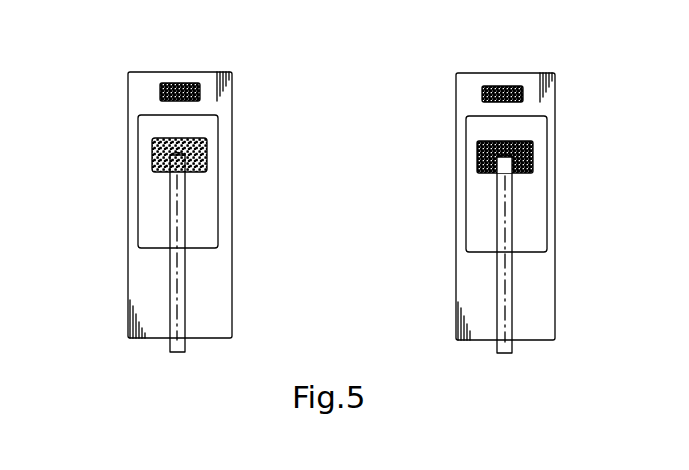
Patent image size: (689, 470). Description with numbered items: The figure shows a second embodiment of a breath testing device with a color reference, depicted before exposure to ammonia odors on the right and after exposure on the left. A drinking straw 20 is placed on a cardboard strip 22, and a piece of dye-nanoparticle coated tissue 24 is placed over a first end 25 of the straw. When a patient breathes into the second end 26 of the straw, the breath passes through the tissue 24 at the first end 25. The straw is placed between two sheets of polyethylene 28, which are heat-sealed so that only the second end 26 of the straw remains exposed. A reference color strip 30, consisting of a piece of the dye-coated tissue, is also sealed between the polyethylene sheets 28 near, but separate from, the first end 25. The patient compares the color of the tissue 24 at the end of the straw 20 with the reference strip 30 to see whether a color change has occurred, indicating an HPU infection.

The drinking straw 20 is at (331, 219).
The cardboard strip 22 is at (138, 226).
The dye-nanoparticle coated tissue 24 is at (207, 165).
The first end 25 is at (181, 158).
The second end 26 is at (178, 356).
The sheets of polyethylene 28 is at (232, 282).
The reference color strip 30 is at (178, 81).